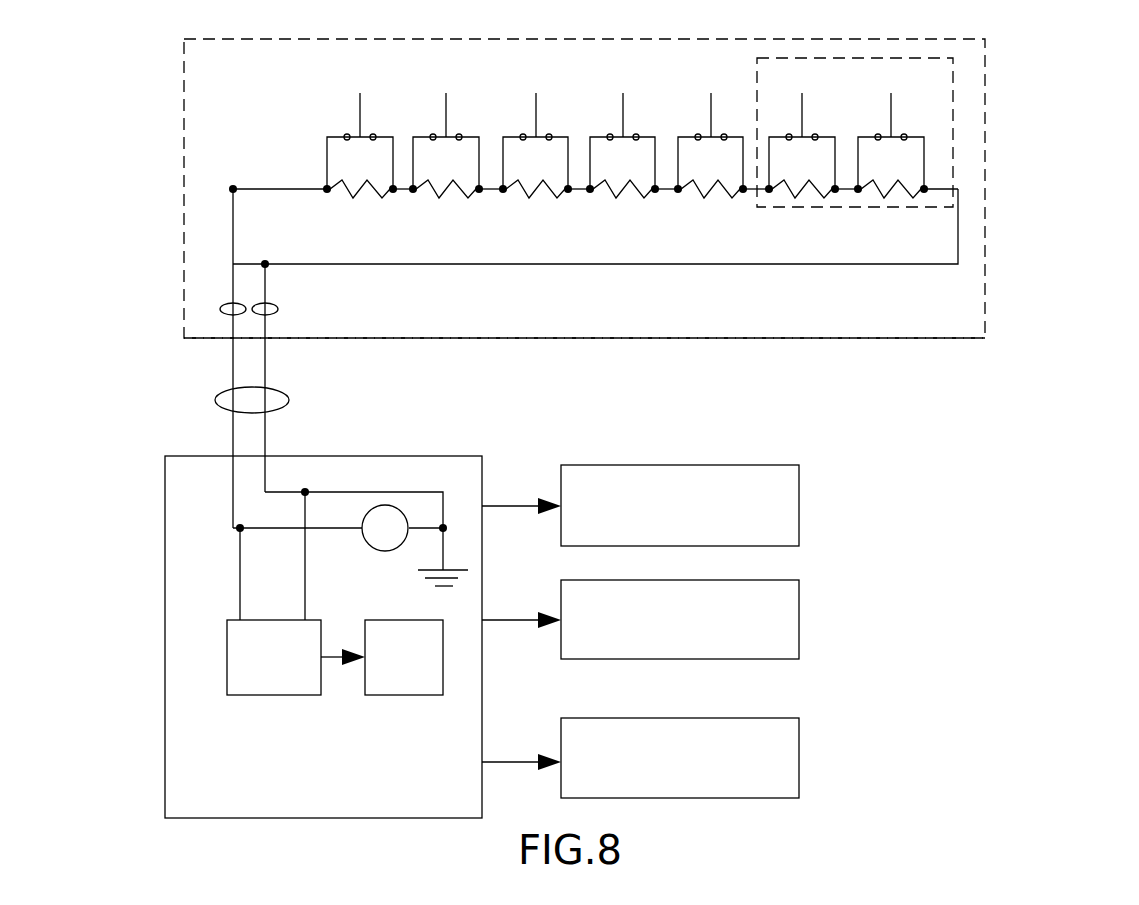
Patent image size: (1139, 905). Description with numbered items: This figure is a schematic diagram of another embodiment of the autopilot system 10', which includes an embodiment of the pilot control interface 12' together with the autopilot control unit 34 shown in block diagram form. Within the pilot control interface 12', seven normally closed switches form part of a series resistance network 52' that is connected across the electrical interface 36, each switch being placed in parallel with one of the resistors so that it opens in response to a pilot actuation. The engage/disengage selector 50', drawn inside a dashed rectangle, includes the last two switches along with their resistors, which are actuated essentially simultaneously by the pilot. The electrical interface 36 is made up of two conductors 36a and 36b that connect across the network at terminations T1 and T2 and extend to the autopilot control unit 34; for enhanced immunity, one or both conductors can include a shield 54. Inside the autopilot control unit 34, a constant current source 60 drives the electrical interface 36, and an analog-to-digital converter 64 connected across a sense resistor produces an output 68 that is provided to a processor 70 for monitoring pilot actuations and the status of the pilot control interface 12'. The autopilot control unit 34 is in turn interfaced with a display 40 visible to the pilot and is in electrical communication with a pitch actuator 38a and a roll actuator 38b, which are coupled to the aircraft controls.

The autopilot system 10' is at (636, 184).
The pilot control interface 12' is at (631, 279).
The series resistance network 52' is at (539, 175).
The engage/disengage selector 50' is at (913, 148).
The termination T1 is at (230, 189).
The termination T2 is at (233, 264).
The shield 54 is at (220, 309).
The conductor 36a is at (233, 371).
The conductor 36b is at (265, 372).
The electrical interface 36 is at (215, 397).
The autopilot control unit 34 is at (482, 468).
The constant current source 60 is at (386, 505).
The analog-to-digital converter 64 is at (227, 657).
The output 68 is at (329, 653).
The processor 70 is at (443, 660).
The display 40 is at (688, 465).
The pitch actuator 38a is at (799, 616).
The roll actuator 38b is at (799, 757).